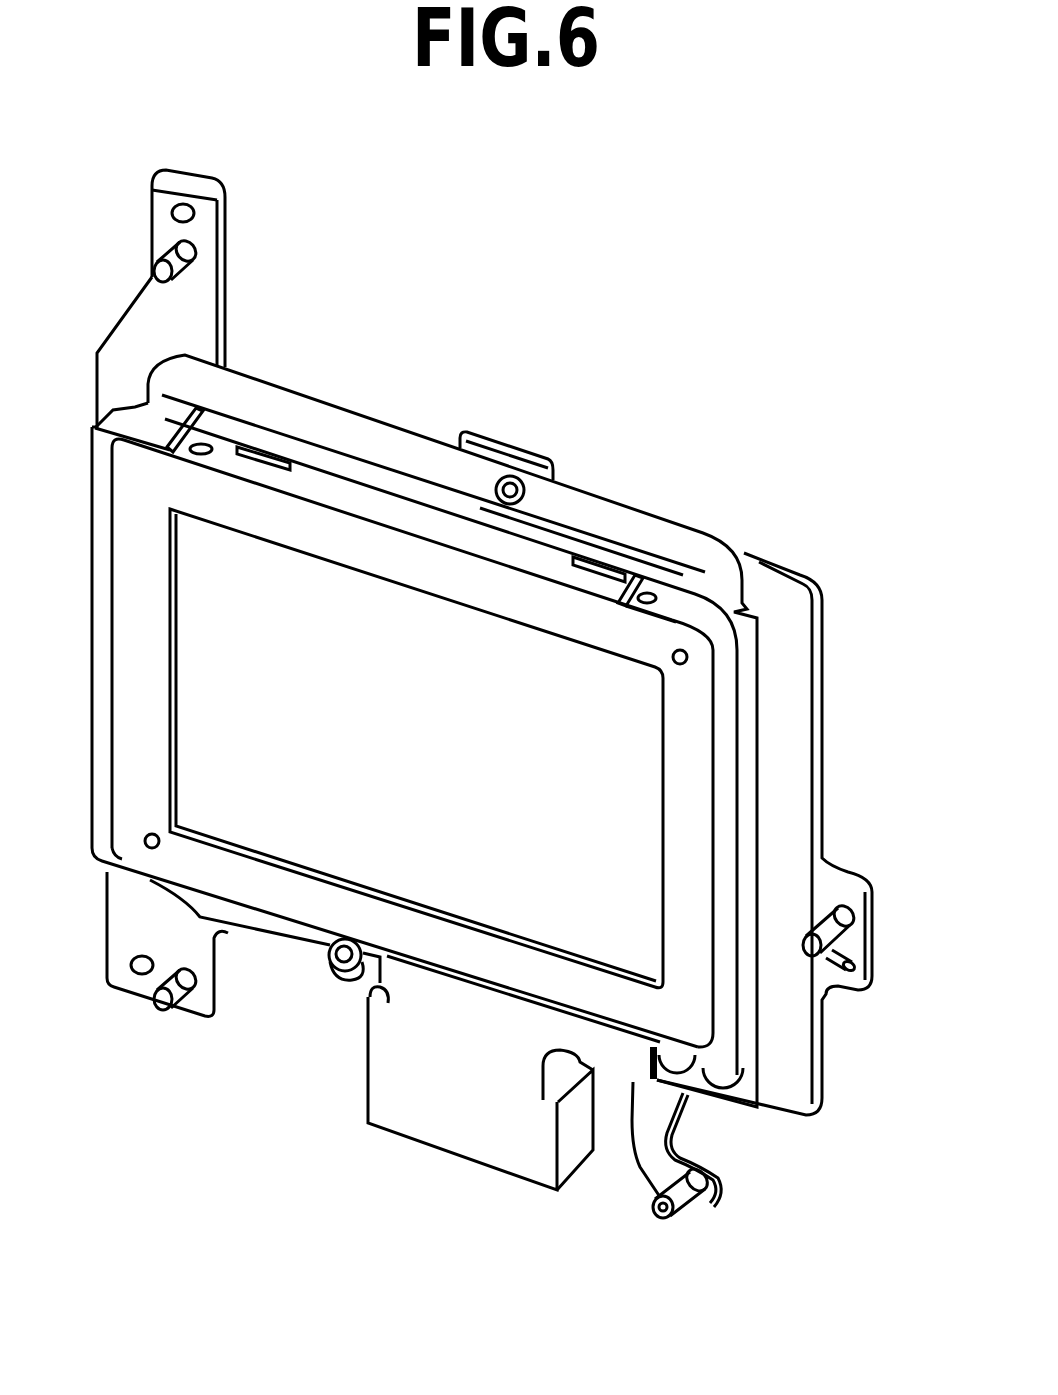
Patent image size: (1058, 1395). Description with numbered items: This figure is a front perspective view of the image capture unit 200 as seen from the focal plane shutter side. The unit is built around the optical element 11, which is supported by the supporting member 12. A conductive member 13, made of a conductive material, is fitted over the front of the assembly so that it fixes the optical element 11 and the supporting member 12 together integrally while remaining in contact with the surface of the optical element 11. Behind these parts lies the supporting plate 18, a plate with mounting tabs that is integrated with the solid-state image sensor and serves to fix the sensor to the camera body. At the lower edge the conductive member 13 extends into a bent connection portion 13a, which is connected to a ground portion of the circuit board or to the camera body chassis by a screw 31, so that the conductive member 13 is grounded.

The display unit assembly 200 is at (592, 268).
The supporting plate 18 is at (783, 597).
The supporting member 12 is at (723, 835).
The conductive member 13 is at (697, 687).
The optical element 11 is at (633, 760).
The connection portion 13a is at (717, 1183).
The screw 31 is at (670, 1217).